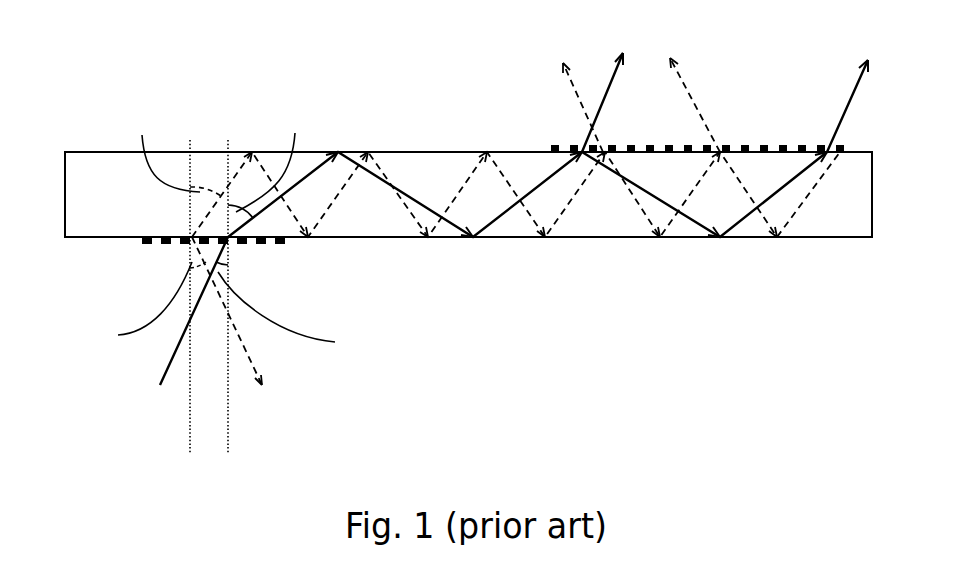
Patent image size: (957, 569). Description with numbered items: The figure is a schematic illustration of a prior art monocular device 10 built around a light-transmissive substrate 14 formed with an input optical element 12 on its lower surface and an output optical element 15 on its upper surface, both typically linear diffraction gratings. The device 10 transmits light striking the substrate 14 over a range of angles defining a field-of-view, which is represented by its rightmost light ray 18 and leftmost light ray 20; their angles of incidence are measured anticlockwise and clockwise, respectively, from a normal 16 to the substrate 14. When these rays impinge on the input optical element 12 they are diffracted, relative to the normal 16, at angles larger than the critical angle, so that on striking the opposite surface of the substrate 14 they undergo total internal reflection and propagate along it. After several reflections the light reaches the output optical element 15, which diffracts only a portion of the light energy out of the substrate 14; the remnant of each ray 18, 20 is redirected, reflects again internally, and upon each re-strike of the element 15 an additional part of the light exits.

The monocular device 10 is at (147, 52).
The input optical element 12 is at (162, 246).
The light-transmissive substrate 14 is at (468, 194).
The output optical element 15 is at (742, 145).
The normal 16 is at (203, 296).
The rightmost light ray 18 is at (516, 217).
The leftmost light ray 20 is at (498, 216).